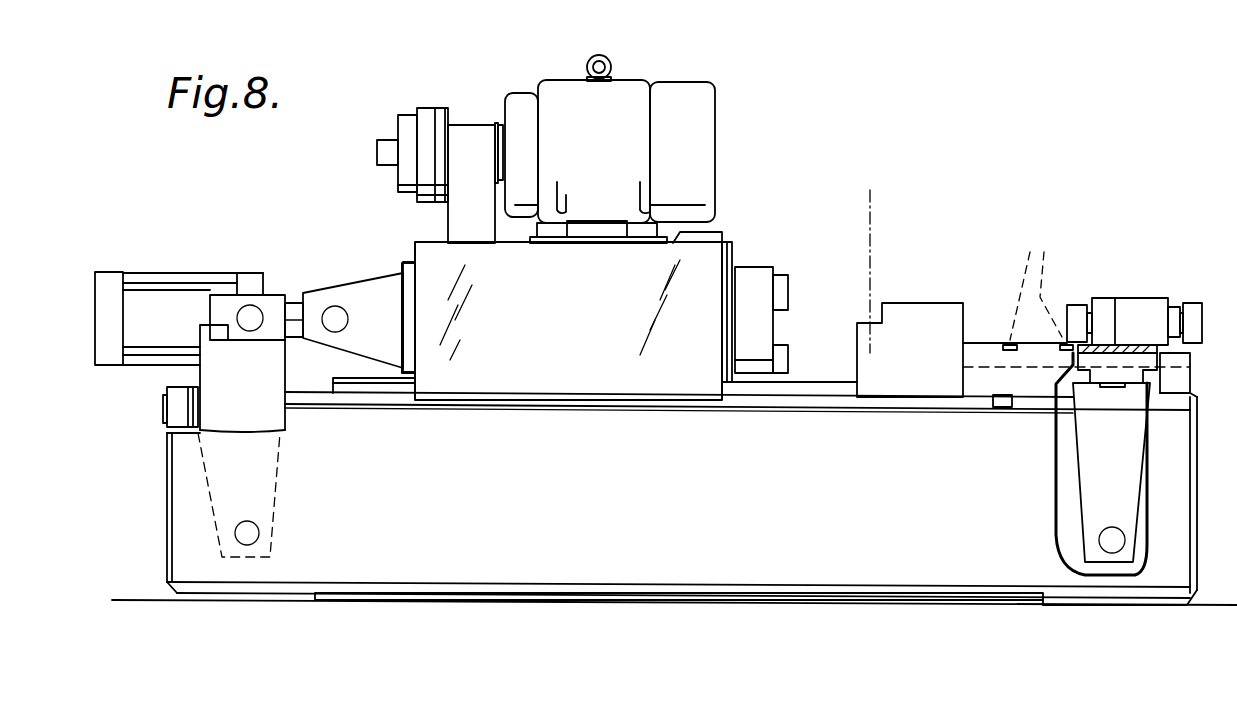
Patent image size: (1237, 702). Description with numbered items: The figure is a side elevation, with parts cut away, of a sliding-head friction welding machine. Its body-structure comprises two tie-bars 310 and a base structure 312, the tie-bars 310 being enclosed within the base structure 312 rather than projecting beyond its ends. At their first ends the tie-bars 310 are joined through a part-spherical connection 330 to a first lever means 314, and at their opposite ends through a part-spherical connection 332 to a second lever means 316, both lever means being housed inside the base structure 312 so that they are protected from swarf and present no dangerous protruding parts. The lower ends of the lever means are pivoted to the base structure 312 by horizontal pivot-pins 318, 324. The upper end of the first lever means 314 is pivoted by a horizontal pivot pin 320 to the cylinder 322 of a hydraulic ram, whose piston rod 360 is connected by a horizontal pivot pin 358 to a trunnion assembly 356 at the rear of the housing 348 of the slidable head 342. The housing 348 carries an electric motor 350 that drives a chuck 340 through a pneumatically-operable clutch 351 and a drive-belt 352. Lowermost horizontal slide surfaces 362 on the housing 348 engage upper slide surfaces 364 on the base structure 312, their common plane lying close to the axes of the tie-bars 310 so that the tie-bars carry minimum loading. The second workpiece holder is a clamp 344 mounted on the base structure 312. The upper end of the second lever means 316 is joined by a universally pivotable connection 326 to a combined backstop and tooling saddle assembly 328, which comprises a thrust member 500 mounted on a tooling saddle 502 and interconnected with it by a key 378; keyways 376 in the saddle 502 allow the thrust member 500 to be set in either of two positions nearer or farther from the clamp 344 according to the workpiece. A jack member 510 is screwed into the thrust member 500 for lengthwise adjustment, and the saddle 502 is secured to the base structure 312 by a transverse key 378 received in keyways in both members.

The tie-bars 310 is at (298, 408).
The base structure 312 is at (167, 532).
The first lever means 314 is at (260, 418).
The second lever means 316 is at (1058, 533).
The horizontal pivot-pin 318 is at (242, 533).
The horizontal pivot pin 320 is at (253, 314).
The cylinder 322 is at (247, 278).
The horizontal pivot-pin 324 is at (1115, 543).
The universally pivotable connection 326 is at (1140, 355).
The combined backstop and tooling saddle assembly 328 is at (1195, 302).
The part-spherical connection 330 is at (175, 408).
The part-spherical connection 332 is at (1137, 425).
The chuck 340 is at (755, 280).
The slidable head 342 is at (593, 401).
The clamp 344 is at (887, 392).
The housing 348 is at (700, 272).
The electric motor 350 is at (628, 95).
The pneumatically-operable clutch 351 is at (424, 117).
The drive-belt 352 is at (470, 133).
The trunnion assembly 356 is at (388, 352).
The horizontal pivot pin 358 is at (336, 312).
The piston rod 360 is at (293, 303).
The lowermost horizontal slide surfaces 362 is at (700, 403).
The upper slide surfaces 364 is at (768, 403).
The keyways 376 is at (1030, 278).
The transverse key 378 is at (1000, 408).
The thrust member 500 is at (1130, 298).
The tooling saddle 502 is at (977, 398).
The jack member 510 is at (1075, 305).